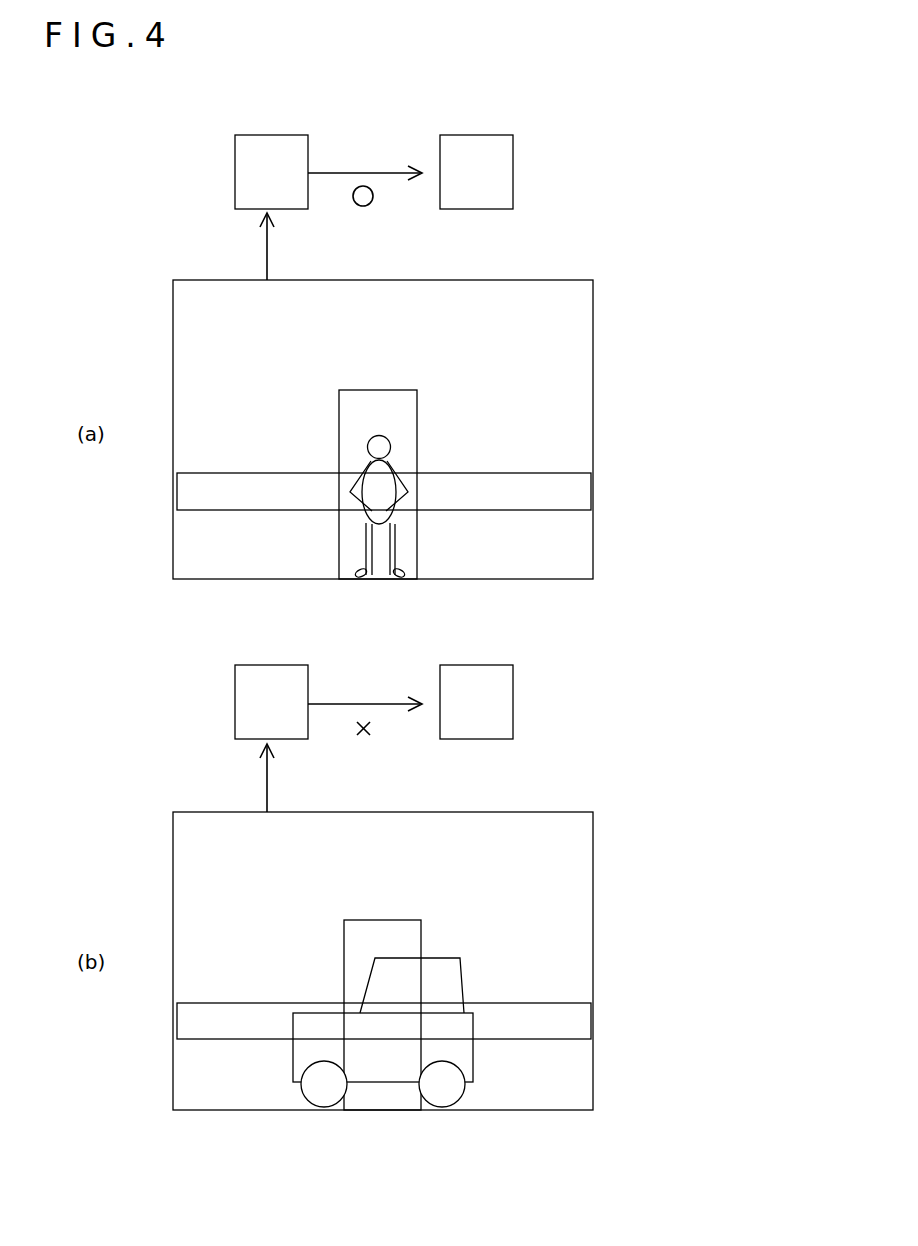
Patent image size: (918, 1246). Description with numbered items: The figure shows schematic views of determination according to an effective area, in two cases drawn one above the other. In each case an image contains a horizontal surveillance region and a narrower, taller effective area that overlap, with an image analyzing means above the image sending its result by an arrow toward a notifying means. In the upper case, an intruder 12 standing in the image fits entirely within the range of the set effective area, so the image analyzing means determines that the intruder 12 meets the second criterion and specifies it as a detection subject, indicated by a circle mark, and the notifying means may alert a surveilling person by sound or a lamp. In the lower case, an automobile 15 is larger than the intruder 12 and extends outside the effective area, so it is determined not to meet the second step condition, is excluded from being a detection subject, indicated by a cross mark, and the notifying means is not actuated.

The intruder 12 is at (398, 468).
The automobile 15 is at (430, 958).